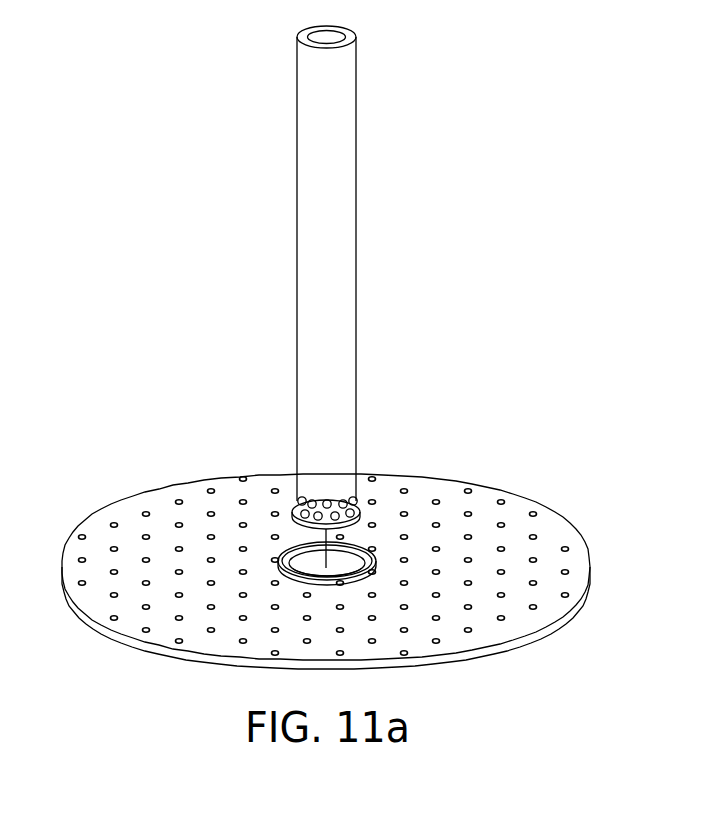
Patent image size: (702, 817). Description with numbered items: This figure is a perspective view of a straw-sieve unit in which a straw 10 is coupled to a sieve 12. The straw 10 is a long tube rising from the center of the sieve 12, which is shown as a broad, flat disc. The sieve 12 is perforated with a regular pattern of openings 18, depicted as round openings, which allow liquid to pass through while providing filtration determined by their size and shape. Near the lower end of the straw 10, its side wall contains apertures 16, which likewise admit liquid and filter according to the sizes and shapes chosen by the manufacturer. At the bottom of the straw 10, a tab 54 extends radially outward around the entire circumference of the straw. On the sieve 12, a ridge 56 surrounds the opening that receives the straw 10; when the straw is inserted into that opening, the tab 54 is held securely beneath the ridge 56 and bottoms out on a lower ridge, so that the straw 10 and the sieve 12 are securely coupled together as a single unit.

The straw 10 is at (347, 325).
The plate / base disc 12 is at (578, 531).
The apertures 16 is at (342, 500).
The openings 18 is at (503, 522).
The tab 54 is at (362, 522).
The ridge 56 is at (297, 547).